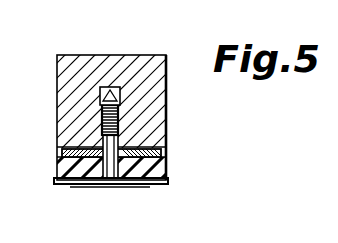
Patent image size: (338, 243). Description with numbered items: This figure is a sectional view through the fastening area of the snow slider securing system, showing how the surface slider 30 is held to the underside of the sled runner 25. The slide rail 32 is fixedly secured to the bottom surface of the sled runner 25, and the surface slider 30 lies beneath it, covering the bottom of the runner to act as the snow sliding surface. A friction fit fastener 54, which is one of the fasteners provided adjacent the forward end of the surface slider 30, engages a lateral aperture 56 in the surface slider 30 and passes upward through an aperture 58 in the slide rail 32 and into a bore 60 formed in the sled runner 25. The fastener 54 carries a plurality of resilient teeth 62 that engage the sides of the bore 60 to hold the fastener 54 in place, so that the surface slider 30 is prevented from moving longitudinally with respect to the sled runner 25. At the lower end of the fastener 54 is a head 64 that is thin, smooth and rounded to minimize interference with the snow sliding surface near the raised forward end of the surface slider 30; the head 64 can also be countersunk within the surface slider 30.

The sled runner 25 is at (96, 55).
The bore 60 is at (121, 97).
The resilient teeth 62 is at (101, 113).
The slide rail 32 is at (140, 151).
The aperture 58 is at (167, 154).
The lateral aperture 56 is at (166, 173).
The friction fit fastener 54 is at (110, 188).
The head 64 is at (83, 187).
The surface slider 30 is at (163, 188).